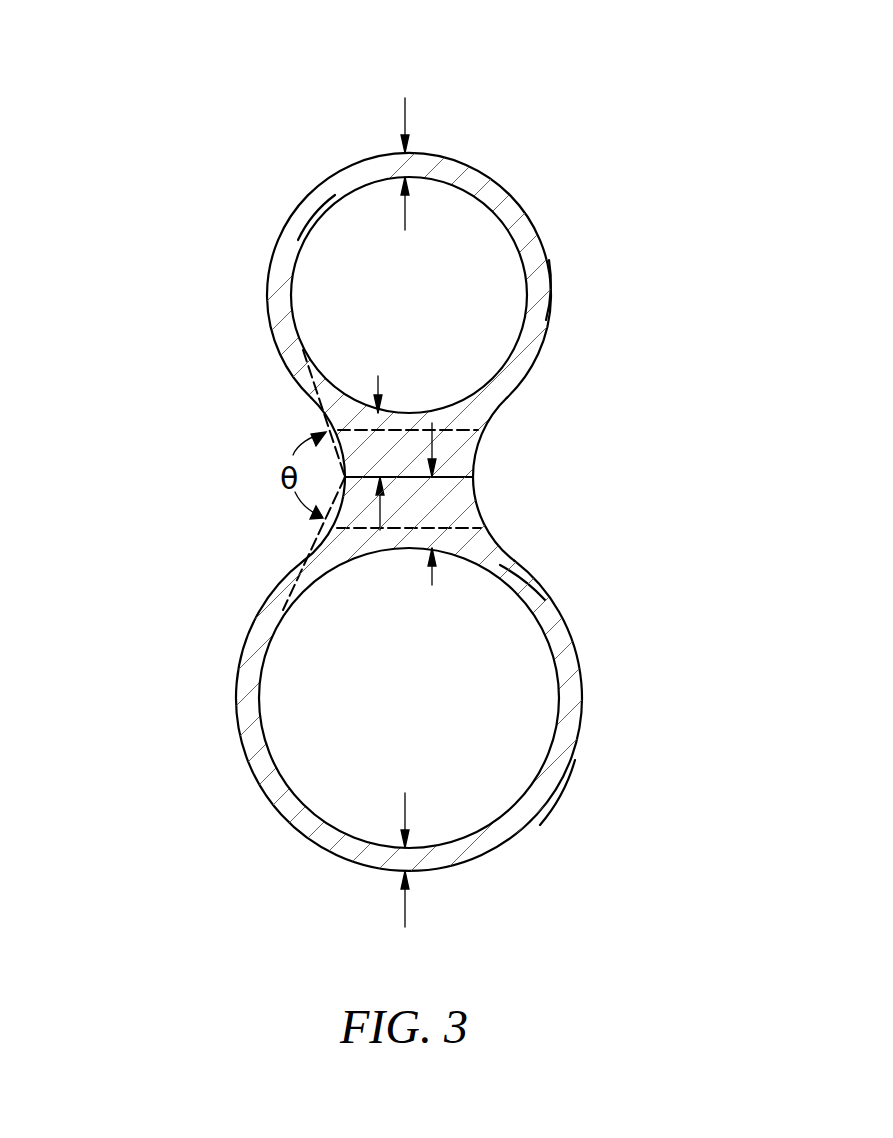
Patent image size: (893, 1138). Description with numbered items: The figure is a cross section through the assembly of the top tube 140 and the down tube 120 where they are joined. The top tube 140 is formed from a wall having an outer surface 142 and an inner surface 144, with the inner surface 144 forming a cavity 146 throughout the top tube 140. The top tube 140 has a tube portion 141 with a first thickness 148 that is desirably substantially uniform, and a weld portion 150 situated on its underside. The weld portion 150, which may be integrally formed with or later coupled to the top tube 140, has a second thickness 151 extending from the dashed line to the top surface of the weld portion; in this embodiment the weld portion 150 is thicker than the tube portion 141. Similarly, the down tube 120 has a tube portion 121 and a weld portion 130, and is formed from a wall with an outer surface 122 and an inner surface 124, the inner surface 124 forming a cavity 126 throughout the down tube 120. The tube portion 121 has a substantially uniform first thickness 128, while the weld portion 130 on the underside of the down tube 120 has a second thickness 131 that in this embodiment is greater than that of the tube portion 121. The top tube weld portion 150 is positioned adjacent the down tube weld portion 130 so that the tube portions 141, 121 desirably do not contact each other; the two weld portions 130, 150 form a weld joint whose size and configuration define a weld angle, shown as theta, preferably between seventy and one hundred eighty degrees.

The down tube 120 is at (243, 765).
The tube portion 121 is at (522, 582).
The outer surface of second loop 122 is at (548, 803).
The inner surface 124 is at (557, 740).
The cavity 126 is at (493, 662).
The second loop wall thickness 128 is at (405, 793).
The weld portion 130 is at (465, 513).
The connecting portion lower thickness 131 is at (432, 573).
The top tube 140 is at (270, 287).
The tube portion 141 is at (548, 285).
The outer surface 142 is at (466, 162).
The inner surface 144 is at (322, 202).
The cavity 146 is at (455, 245).
The first thickness 148 is at (405, 104).
The weld portion 150 is at (463, 447).
The second thickness 151 is at (378, 383).